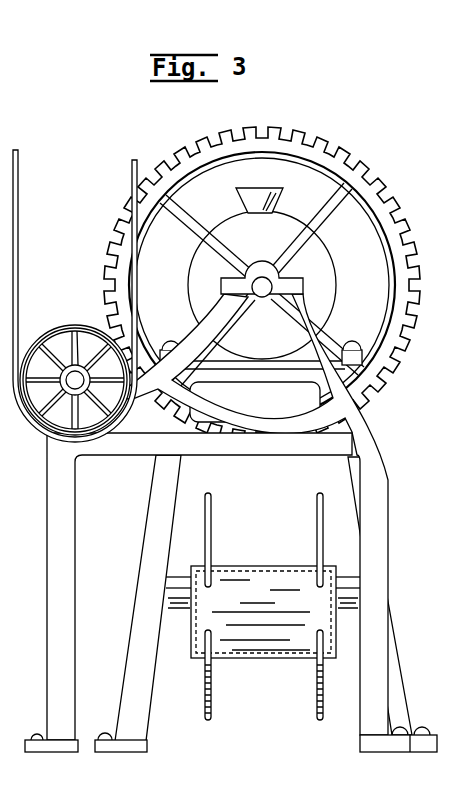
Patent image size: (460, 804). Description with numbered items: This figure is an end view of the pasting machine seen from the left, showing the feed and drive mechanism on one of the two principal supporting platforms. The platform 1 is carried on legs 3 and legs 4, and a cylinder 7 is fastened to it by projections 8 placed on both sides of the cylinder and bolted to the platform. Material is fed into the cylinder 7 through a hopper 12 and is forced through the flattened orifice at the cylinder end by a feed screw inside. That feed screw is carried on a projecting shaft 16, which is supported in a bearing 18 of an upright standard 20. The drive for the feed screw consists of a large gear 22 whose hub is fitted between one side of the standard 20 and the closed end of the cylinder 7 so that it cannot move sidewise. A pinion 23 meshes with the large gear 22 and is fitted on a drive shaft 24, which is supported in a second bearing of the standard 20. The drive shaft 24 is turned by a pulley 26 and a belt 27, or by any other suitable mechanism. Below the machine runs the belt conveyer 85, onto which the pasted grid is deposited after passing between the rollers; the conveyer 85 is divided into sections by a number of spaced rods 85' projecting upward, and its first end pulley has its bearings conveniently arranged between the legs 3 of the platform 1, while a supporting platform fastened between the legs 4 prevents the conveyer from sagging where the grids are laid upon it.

The platform 1 is at (265, 380).
The legs 3 is at (149, 510).
The legs 4 is at (176, 582).
The cylinder 7 is at (327, 268).
The projections 8 is at (334, 329).
The hopper 12 is at (259, 210).
The projecting shaft 16 is at (262, 277).
The bearing 18 is at (243, 285).
The standard 20 is at (384, 487).
The large gear 22 is at (324, 146).
The pinion 23 is at (92, 328).
The drive shaft 24 is at (43, 427).
The pulley 26 is at (54, 326).
The belt 27 is at (15, 201).
The belt conveyer 85 is at (263, 637).
The spaced rods 85' is at (264, 606).